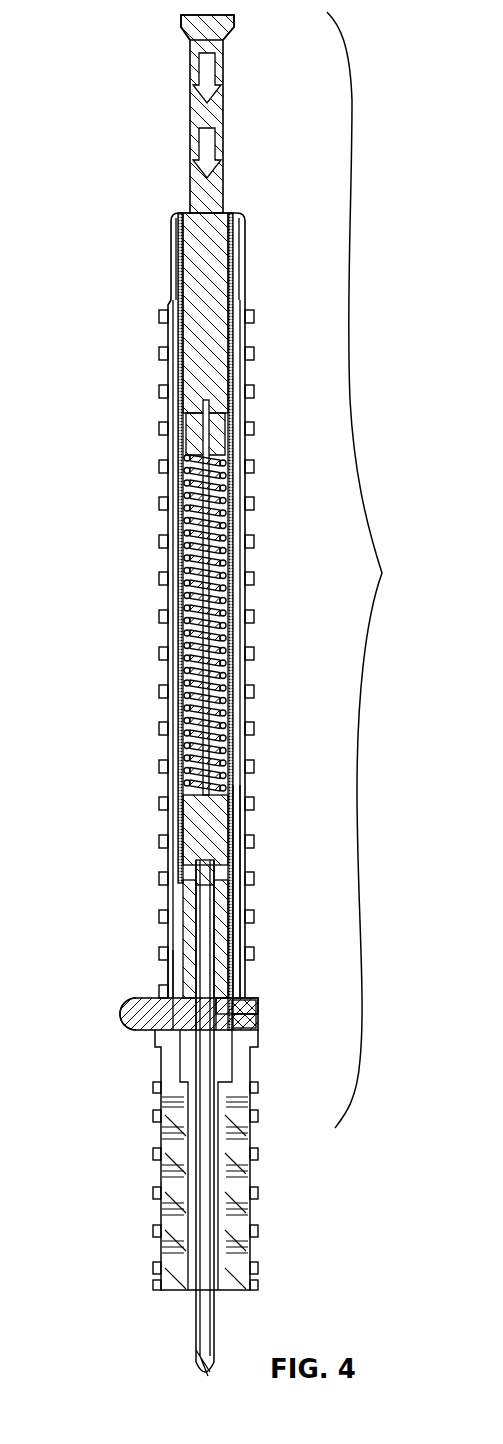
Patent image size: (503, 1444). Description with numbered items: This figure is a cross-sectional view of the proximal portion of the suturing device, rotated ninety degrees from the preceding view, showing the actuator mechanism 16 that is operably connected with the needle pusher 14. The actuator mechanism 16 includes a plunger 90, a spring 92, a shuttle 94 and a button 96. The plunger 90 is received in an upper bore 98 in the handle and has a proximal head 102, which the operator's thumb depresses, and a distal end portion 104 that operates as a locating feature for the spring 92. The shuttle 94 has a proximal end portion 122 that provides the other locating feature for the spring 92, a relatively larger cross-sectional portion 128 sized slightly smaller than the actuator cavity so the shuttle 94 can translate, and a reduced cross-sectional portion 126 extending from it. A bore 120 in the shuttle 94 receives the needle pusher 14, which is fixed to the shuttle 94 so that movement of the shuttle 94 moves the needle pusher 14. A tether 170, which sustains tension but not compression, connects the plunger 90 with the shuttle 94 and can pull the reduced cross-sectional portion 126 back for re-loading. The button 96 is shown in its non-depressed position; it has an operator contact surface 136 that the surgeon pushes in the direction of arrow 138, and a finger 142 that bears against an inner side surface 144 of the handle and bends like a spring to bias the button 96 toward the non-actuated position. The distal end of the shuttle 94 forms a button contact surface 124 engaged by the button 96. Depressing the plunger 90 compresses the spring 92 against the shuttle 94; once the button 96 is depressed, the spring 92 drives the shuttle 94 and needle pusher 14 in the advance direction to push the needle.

The actuator mechanism 16 is at (385, 570).
The proximal head 102 is at (190, 31).
The plunger 90 is at (192, 150).
The upper bore 98 is at (184, 288).
The distal end portion 104 is at (183, 430).
The spring 92 is at (178, 478).
The tether 170 is at (185, 512).
The shuttle 94 is at (186, 838).
The proximal end portion 122 is at (243, 805).
The relatively larger cross-sectional portion 128 is at (232, 848).
The bore 120 is at (232, 950).
The reduced cross-sectional portion 126 is at (195, 920).
The needle pusher 14 is at (196, 965).
The button 96 is at (150, 985).
The arrow 138 is at (104, 1024).
The operator contact surface 136 is at (128, 1034).
The button contact surface 124 is at (258, 998).
The finger 142 is at (254, 1006).
The inner side surface 144 is at (252, 1026).